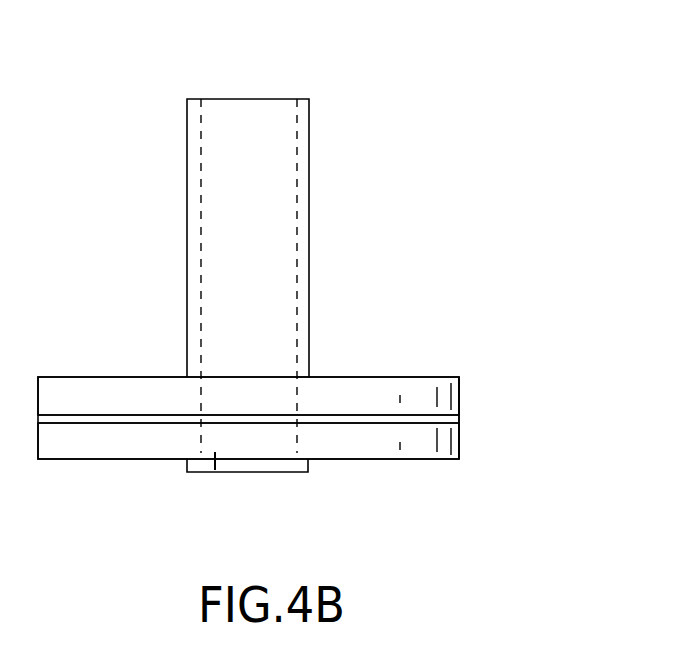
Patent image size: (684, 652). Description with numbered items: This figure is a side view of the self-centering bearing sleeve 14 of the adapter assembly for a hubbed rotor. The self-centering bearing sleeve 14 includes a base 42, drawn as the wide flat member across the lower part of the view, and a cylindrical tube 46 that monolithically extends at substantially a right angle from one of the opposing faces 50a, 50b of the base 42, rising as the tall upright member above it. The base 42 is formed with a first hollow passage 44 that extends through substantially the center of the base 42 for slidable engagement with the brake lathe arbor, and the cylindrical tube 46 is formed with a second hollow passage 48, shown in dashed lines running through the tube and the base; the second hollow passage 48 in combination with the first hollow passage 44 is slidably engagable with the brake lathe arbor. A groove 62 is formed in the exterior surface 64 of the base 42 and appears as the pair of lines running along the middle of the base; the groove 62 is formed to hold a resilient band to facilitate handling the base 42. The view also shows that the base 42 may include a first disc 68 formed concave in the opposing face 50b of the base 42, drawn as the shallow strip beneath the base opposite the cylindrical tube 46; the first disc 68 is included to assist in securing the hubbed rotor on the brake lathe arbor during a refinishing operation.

The self-centering bearing sleeve 14 is at (478, 187).
The base 42 is at (75, 377).
The first hollow passage 44 is at (215, 470).
The cylindrical tube 46 is at (187, 187).
The second hollow passage 48 is at (269, 110).
The opposing face 50a is at (423, 378).
The opposing face 50b is at (62, 460).
The groove 62 is at (459, 420).
The exterior surface 64 is at (459, 453).
The first disc 68 is at (262, 470).